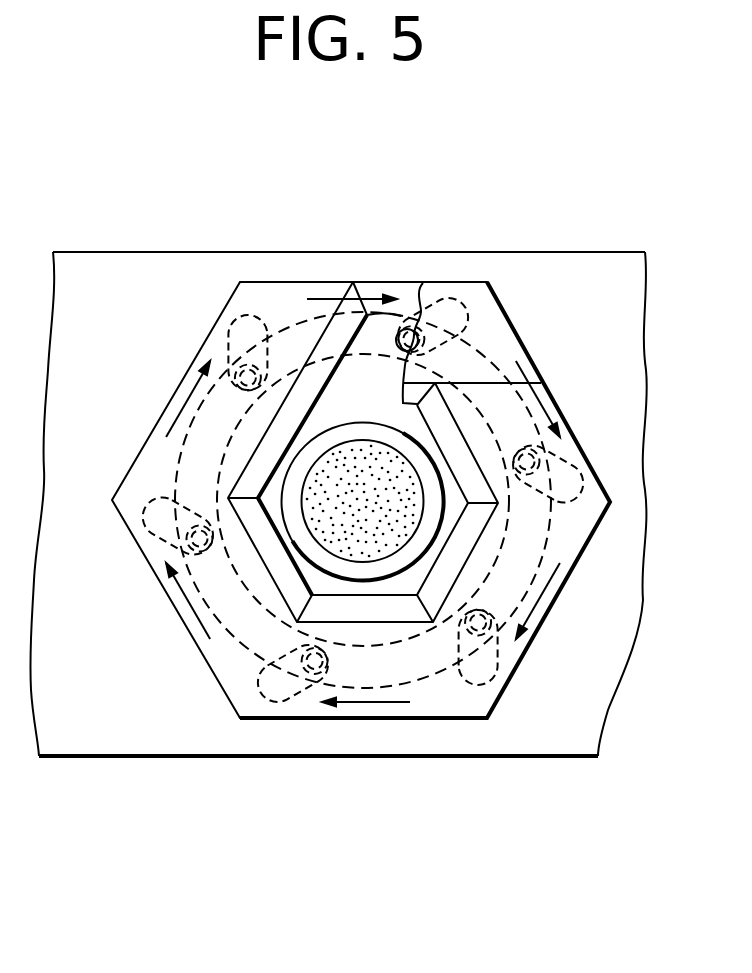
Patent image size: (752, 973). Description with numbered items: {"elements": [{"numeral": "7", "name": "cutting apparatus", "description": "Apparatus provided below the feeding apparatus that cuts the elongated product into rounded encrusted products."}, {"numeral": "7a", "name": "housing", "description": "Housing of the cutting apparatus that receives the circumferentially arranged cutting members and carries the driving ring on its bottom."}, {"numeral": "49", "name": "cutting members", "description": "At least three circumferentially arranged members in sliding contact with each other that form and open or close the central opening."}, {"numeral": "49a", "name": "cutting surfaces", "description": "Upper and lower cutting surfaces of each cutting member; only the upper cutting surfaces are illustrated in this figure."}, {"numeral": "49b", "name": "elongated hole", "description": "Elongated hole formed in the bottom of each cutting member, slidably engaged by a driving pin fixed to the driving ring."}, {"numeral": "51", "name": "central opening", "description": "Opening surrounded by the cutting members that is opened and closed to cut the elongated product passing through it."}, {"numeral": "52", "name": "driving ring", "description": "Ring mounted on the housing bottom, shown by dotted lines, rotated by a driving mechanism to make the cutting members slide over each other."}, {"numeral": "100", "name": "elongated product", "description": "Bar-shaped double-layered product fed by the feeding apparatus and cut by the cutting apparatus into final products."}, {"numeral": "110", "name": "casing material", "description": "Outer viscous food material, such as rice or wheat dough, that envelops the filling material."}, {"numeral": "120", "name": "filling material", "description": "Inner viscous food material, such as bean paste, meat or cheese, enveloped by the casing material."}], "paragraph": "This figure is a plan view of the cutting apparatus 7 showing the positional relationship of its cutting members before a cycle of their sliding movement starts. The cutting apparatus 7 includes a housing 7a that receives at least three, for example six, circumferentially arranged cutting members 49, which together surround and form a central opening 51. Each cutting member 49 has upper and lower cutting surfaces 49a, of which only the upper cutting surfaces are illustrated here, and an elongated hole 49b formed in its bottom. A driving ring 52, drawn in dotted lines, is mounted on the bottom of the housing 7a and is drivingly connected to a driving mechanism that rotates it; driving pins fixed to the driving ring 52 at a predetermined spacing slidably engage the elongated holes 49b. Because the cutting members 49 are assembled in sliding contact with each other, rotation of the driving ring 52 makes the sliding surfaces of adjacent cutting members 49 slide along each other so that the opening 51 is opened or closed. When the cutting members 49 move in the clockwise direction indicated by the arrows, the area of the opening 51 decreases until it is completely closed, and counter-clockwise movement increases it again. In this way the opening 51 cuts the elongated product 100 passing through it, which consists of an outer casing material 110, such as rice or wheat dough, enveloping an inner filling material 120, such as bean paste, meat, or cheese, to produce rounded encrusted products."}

The base plate 7 is at (296, 237).
The edge of base plate 7a is at (127, 723).
The hexagonal holder block 49 is at (272, 303).
The hexagonal rim of holder 49a is at (310, 382).
The cut-away portion of holder 49b is at (462, 307).
The projection 51 is at (360, 375).
The slot 52 is at (480, 357).
The annular gap 100 is at (315, 577).
The cylindrical sleeve 110 is at (390, 577).
The filling material 120 is at (365, 547).